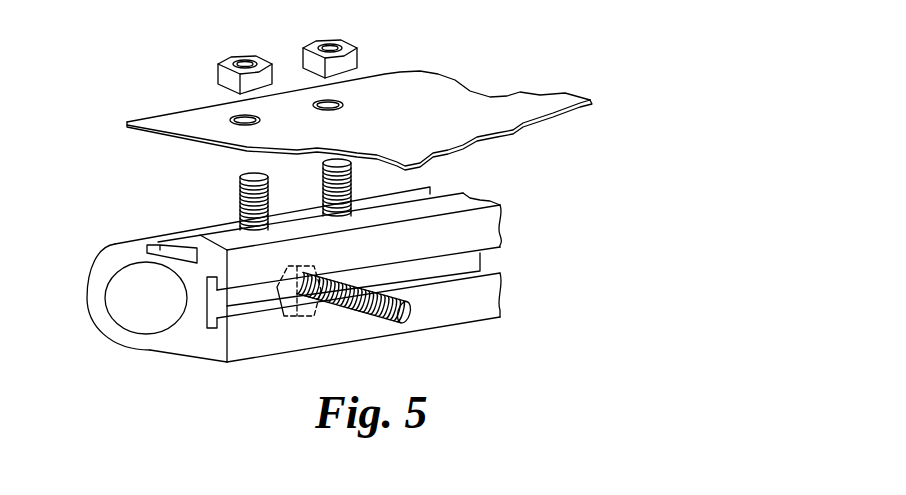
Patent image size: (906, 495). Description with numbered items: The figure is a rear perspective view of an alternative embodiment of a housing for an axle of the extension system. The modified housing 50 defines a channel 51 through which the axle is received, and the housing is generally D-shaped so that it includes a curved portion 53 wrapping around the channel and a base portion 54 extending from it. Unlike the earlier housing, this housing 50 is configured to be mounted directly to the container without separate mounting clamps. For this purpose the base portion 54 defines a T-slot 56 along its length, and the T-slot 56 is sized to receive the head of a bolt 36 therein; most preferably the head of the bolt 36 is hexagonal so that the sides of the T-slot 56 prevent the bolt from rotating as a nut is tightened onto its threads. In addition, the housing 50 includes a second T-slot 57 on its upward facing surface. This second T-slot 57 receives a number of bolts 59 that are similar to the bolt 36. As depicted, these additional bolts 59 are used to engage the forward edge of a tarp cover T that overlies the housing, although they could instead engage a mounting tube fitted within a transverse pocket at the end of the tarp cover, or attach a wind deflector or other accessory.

The tarp cover T is at (507, 107).
The bolt 36 is at (413, 315).
The housing 50 is at (274, 297).
The channel 51 is at (120, 292).
The curved portion 53 is at (87, 273).
The base portion 54 is at (218, 342).
The T-slot 56 is at (216, 300).
The second T-slot 57 is at (173, 240).
The bolts 59 is at (322, 176).